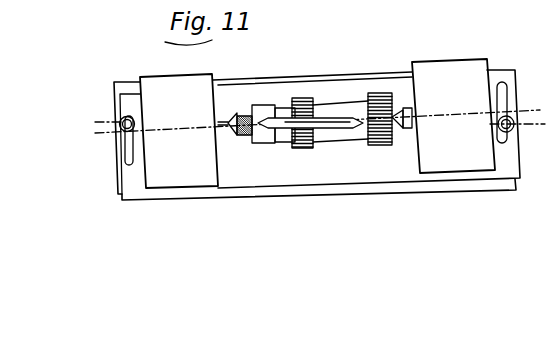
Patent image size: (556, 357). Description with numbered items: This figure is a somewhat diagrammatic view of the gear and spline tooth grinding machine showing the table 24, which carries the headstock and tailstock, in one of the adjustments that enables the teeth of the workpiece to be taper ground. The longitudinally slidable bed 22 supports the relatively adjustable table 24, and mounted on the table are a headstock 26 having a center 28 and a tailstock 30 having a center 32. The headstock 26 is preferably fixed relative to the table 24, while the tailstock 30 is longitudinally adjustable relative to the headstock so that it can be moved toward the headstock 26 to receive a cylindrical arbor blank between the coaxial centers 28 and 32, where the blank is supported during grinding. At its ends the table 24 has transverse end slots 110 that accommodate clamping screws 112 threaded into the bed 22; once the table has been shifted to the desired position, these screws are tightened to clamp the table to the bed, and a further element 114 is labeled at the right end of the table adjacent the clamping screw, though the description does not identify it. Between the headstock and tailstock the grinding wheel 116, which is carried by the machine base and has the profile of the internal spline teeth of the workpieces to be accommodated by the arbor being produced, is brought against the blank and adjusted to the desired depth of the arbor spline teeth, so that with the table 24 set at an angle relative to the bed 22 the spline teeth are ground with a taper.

The bed 22 is at (450, 200).
The table 24 is at (380, 72).
The headstock 26 is at (173, 77).
The center 28 is at (244, 100).
The tailstock 30 is at (467, 62).
The center 32 is at (404, 108).
The transverse end slots 110 is at (120, 117).
The clamping screws 112 is at (120, 122).
The mounting nut 114 is at (547, 147).
The grinding wheel 116 is at (330, 132).